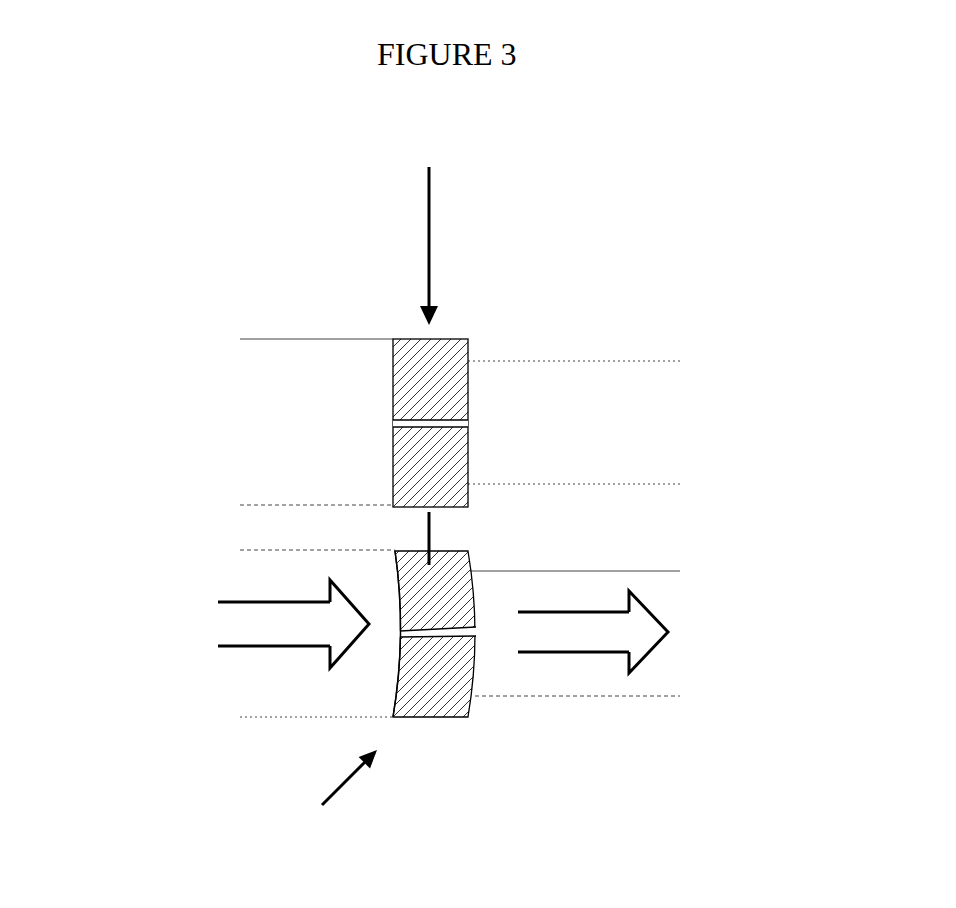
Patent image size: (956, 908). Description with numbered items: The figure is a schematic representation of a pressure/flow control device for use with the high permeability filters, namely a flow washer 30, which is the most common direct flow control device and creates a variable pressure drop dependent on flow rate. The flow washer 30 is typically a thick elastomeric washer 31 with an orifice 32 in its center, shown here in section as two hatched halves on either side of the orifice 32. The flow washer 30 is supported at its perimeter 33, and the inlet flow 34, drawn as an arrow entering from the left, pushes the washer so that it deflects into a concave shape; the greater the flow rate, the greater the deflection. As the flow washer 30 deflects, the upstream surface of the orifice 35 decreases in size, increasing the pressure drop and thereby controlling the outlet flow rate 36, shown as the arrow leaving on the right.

The flow washer 30 is at (355, 490).
The elastomeric washer 31 is at (429, 352).
The orifice 32 is at (425, 420).
The perimeter 33 is at (429, 538).
The inlet flow 34 is at (270, 645).
The upstream surface of the orifice 35 is at (400, 565).
The outlet flow rate 36 is at (668, 617).